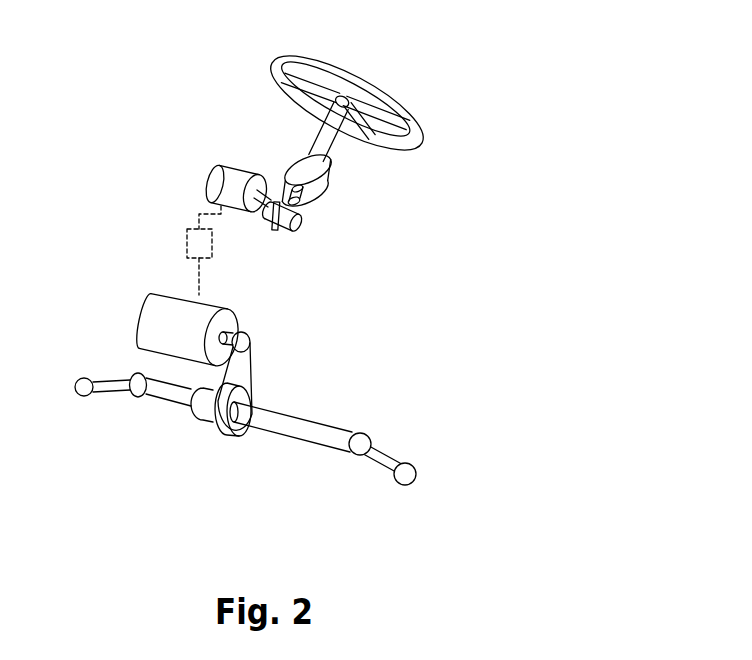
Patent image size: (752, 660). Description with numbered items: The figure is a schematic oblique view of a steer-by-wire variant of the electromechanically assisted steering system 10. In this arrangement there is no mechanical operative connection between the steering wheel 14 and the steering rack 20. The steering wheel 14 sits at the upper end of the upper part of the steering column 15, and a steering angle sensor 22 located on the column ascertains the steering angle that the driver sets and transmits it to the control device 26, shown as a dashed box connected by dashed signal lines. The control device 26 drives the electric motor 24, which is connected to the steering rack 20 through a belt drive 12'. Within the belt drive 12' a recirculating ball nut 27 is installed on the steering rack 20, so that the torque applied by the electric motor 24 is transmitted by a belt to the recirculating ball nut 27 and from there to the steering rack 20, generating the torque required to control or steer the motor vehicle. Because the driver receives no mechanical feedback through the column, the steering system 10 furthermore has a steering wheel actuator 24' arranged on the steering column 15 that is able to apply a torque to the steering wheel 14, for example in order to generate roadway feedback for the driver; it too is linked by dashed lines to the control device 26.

The steering system 10 is at (207, 85).
The steering wheel 14 is at (412, 115).
The steering column 15 is at (328, 143).
The steering angle sensor 22 is at (327, 187).
The steering wheel actuator 24' is at (181, 179).
The control device 26 is at (186, 245).
The belt drive 12' is at (247, 390).
The electric motor 24 is at (135, 330).
The recirculating ball nut 27 is at (190, 428).
The steering rack 20 is at (337, 440).